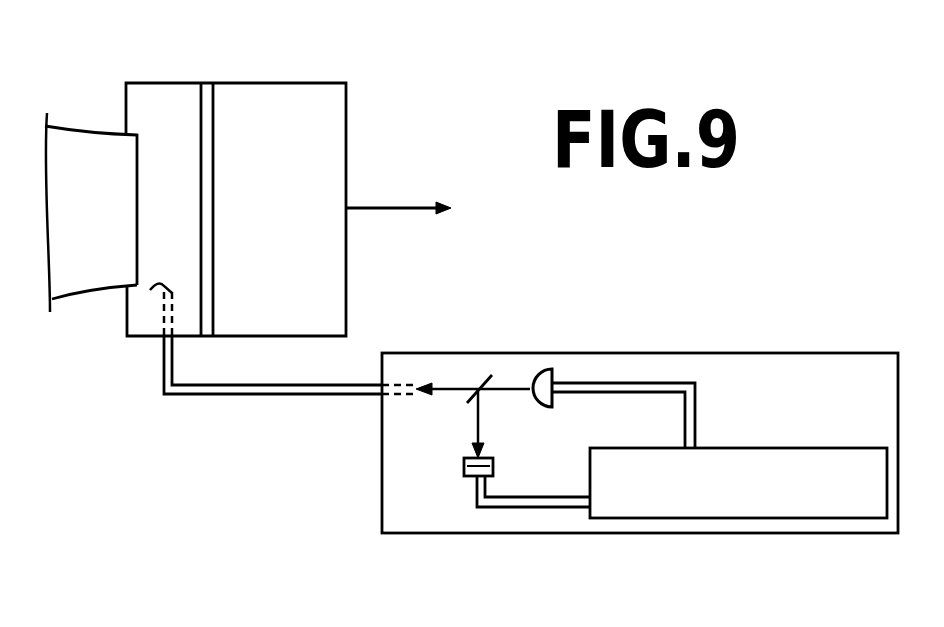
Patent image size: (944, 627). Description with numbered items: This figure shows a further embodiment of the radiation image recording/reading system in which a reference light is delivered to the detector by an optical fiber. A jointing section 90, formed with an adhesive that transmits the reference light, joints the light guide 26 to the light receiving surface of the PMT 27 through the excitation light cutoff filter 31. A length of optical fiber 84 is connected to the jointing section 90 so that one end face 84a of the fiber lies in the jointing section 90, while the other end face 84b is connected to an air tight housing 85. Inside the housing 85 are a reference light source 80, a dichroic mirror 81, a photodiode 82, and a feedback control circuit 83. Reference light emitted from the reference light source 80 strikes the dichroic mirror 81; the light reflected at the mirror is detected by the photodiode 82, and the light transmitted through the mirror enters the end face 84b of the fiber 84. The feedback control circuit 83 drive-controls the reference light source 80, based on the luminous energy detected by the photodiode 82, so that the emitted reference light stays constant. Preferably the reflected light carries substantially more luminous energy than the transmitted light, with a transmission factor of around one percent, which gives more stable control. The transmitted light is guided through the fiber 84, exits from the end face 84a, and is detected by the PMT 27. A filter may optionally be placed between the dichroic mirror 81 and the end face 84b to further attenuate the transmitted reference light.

The light guide 26 is at (81, 155).
The PMT 27 is at (326, 188).
The excitation light cutoff filter 31 is at (212, 84).
The reference light source 80 is at (538, 374).
The dichroic mirror 81 is at (476, 385).
The photodiode 82 is at (462, 472).
The feedback control circuit 83 is at (818, 448).
The optical fiber 84 is at (285, 397).
The end face 84a is at (150, 290).
The end face 84b is at (418, 393).
The air tight housing 85 is at (530, 533).
The jointing section 90 is at (135, 100).